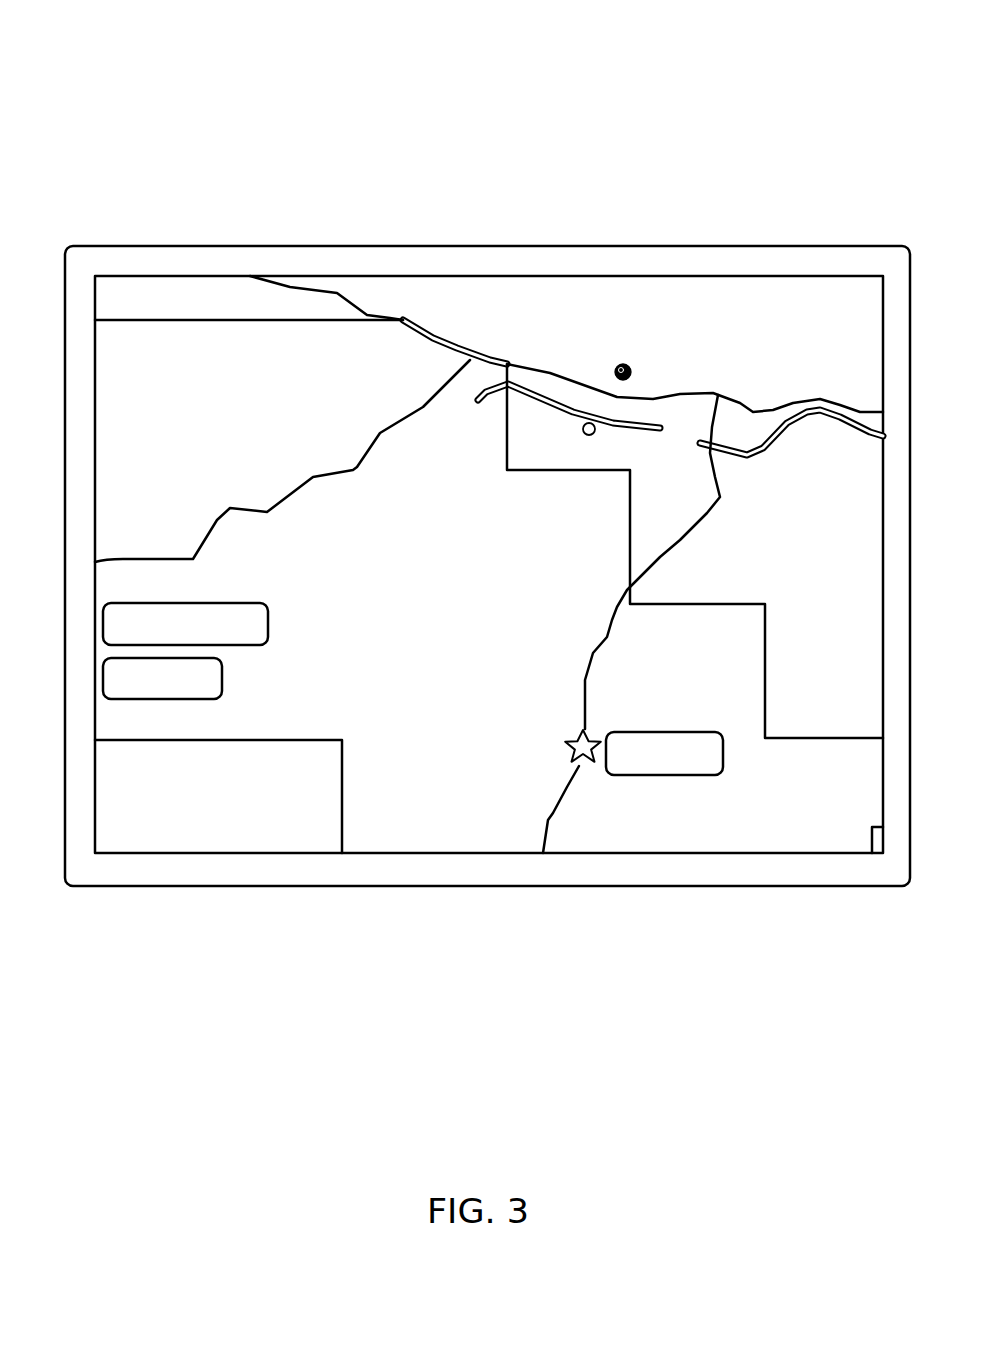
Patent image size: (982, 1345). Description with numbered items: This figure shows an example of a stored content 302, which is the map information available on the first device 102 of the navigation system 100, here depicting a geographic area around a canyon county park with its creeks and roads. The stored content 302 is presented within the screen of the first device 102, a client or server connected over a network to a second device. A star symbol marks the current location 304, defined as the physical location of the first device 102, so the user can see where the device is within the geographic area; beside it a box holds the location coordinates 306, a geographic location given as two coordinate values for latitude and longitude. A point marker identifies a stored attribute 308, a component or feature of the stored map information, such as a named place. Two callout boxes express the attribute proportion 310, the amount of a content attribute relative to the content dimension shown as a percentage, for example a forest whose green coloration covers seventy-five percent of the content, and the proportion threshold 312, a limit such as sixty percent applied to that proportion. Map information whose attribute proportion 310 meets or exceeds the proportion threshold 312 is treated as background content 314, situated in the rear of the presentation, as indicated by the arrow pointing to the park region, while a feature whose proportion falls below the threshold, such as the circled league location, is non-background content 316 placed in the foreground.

The navigation system 100 is at (174, 38).
The first device 102 is at (806, 243).
The stored content 302 is at (158, 296).
The current location 304 is at (583, 766).
The location coordinates 306 is at (664, 753).
The stored attribute 308 is at (614, 367).
The attribute proportion 310 is at (133, 603).
The proportion threshold 312 is at (123, 679).
The background content 314 is at (366, 604).
The non-background content 316 is at (583, 429).